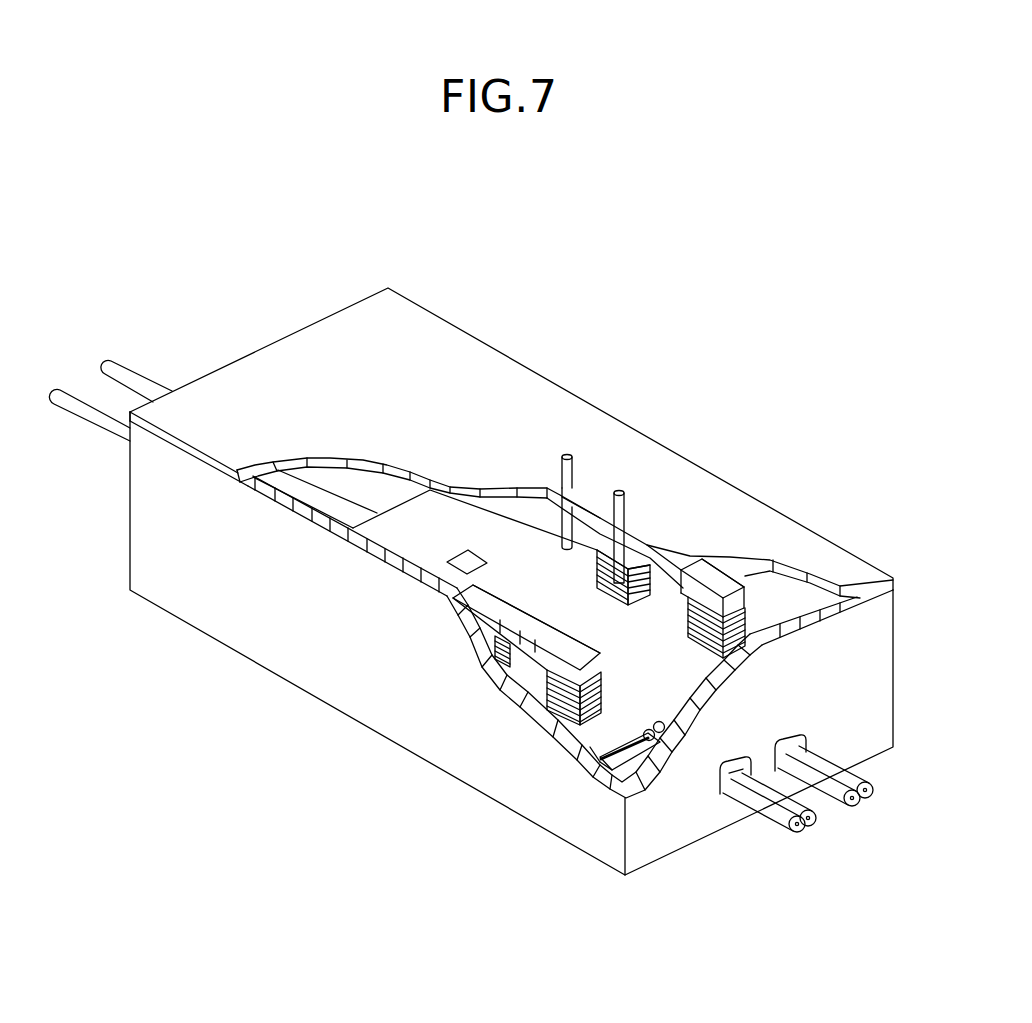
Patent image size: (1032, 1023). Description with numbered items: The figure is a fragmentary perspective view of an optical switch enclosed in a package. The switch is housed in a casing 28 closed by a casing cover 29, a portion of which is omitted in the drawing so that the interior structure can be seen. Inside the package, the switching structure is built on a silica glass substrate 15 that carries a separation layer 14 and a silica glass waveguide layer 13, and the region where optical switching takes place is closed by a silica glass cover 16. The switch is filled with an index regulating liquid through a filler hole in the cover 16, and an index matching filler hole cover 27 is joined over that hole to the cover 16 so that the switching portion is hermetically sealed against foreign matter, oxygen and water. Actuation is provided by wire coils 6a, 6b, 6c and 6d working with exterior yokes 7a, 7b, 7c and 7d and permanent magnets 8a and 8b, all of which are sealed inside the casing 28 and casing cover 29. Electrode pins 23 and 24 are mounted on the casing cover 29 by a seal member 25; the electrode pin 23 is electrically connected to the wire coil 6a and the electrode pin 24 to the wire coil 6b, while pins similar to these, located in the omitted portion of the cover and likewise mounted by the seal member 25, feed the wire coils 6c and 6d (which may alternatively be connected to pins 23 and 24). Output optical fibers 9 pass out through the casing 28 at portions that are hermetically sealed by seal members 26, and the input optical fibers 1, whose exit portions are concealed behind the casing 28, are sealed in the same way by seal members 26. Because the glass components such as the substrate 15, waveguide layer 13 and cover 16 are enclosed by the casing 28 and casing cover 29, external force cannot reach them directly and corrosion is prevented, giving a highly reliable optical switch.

The input optical fibers 1 is at (75, 403).
The output optical fibers 9 is at (813, 767).
The wire coil 6a is at (598, 550).
The wire coil 6b is at (742, 600).
The wire coil 6c is at (517, 663).
The wire coil 6d is at (562, 725).
The exterior yoke 7a is at (633, 557).
The exterior yoke 7b is at (714, 578).
The exterior yoke 7c is at (492, 623).
The exterior yoke 7d is at (541, 662).
The permanent magnet 8a is at (672, 563).
The permanent magnet 8b is at (548, 655).
The silica glass waveguide layer 13 is at (600, 762).
The separation layer 14 is at (605, 758).
The silica glass substrate 15 is at (633, 763).
The silica glass cover 16 is at (590, 747).
The electrode pin 23 is at (565, 454).
The electrode pin 24 is at (622, 494).
The seal member 25 is at (580, 492).
The seal member 26 is at (720, 793).
The index matching filler hole cover 27 is at (440, 582).
The casing 28 is at (260, 610).
The casing cover 29 is at (227, 430).